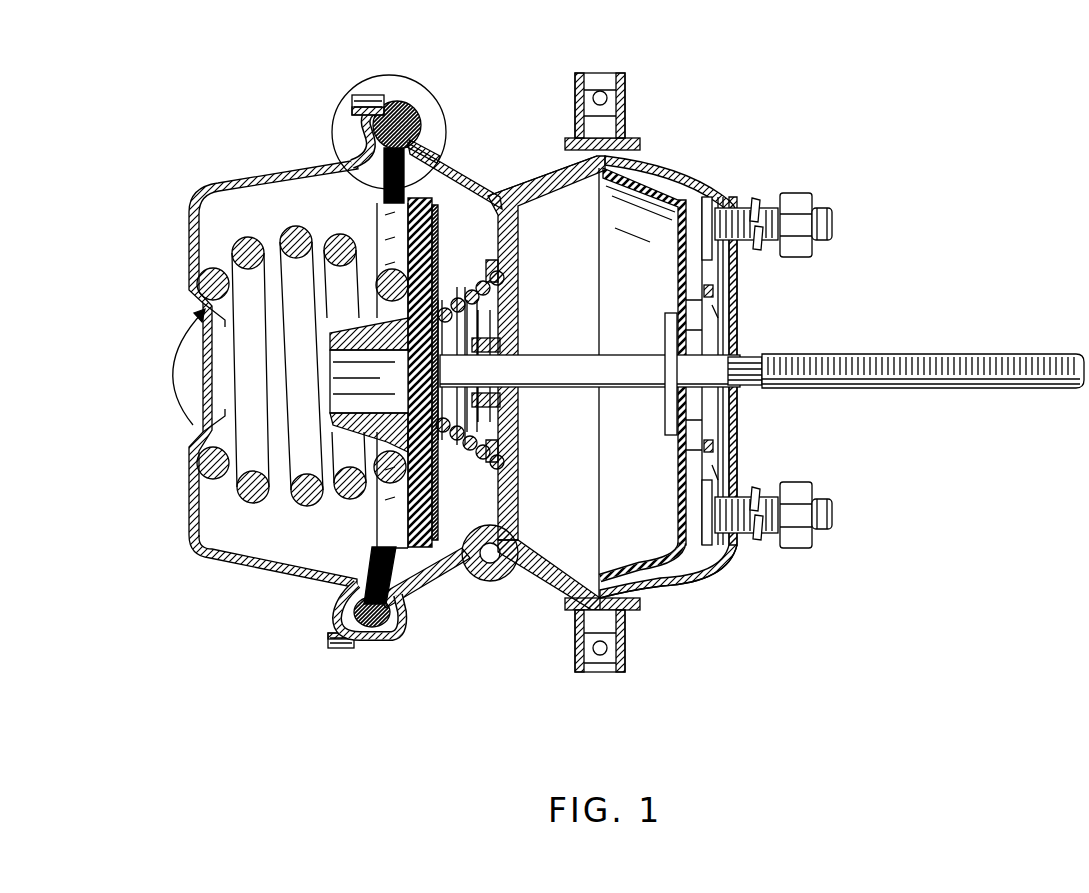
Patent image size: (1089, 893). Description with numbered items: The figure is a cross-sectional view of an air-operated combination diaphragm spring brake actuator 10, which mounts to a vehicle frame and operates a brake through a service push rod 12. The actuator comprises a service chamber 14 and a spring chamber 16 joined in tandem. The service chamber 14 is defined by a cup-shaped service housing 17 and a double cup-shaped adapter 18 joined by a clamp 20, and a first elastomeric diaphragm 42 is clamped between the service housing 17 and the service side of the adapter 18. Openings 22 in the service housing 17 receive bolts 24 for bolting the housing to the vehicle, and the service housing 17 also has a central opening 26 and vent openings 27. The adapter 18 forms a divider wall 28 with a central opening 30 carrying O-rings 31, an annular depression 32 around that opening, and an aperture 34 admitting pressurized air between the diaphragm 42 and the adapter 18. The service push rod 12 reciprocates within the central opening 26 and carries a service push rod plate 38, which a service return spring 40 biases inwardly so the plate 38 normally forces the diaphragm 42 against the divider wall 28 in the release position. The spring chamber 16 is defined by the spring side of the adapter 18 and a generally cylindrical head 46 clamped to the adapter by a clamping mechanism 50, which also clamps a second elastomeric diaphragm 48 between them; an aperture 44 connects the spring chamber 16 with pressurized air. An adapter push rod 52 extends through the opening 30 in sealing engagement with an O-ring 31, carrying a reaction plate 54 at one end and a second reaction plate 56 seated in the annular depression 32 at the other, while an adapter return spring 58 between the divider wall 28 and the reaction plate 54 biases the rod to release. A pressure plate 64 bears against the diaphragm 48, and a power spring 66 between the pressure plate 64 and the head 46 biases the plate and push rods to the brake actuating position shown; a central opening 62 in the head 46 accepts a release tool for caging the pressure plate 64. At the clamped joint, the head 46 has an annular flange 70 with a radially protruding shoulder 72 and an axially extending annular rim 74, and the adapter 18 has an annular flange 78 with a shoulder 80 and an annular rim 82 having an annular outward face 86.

The fluid-operated brake actuator 10 is at (486, 73).
The service push rod 12 is at (930, 354).
The service chamber 14 is at (714, 182).
The spring chamber 16 is at (268, 176).
The service housing 17 is at (658, 162).
The adapter 18 is at (557, 573).
The clamp 20 is at (613, 73).
The openings 22 is at (735, 492).
The bolts 24 is at (838, 227).
The central opening 26 is at (740, 330).
The vent openings 27 is at (692, 574).
The divider wall 28 is at (517, 227).
The central opening 30 is at (517, 354).
The O-rings 31 is at (517, 402).
The annular depression 32 is at (517, 425).
The aperture 34 is at (550, 170).
The service push rod plate 38 is at (693, 273).
The service return spring 40 is at (710, 432).
The first elastomeric diaphragm 42 is at (640, 571).
The aperture 44 is at (460, 175).
The head 46 is at (208, 566).
The second elastomeric diaphragm 48 is at (438, 153).
The clamping mechanism 50 is at (413, 66).
The adapter push rod 52 is at (580, 372).
The reaction plate 54 is at (445, 307).
The second reaction plate 56 is at (668, 417).
The adapter return spring 58 is at (482, 468).
The central opening 62 is at (222, 396).
The pressure plate 64 is at (402, 507).
The power spring 66 is at (237, 495).
The annular flange 70 is at (320, 619).
The shoulder 72 is at (372, 150).
The annular rim 74 is at (368, 100).
The annular flange 78 is at (418, 666).
The shoulder 80 is at (407, 597).
The annular rim 82 is at (398, 100).
The annular outward face 86 is at (357, 650).